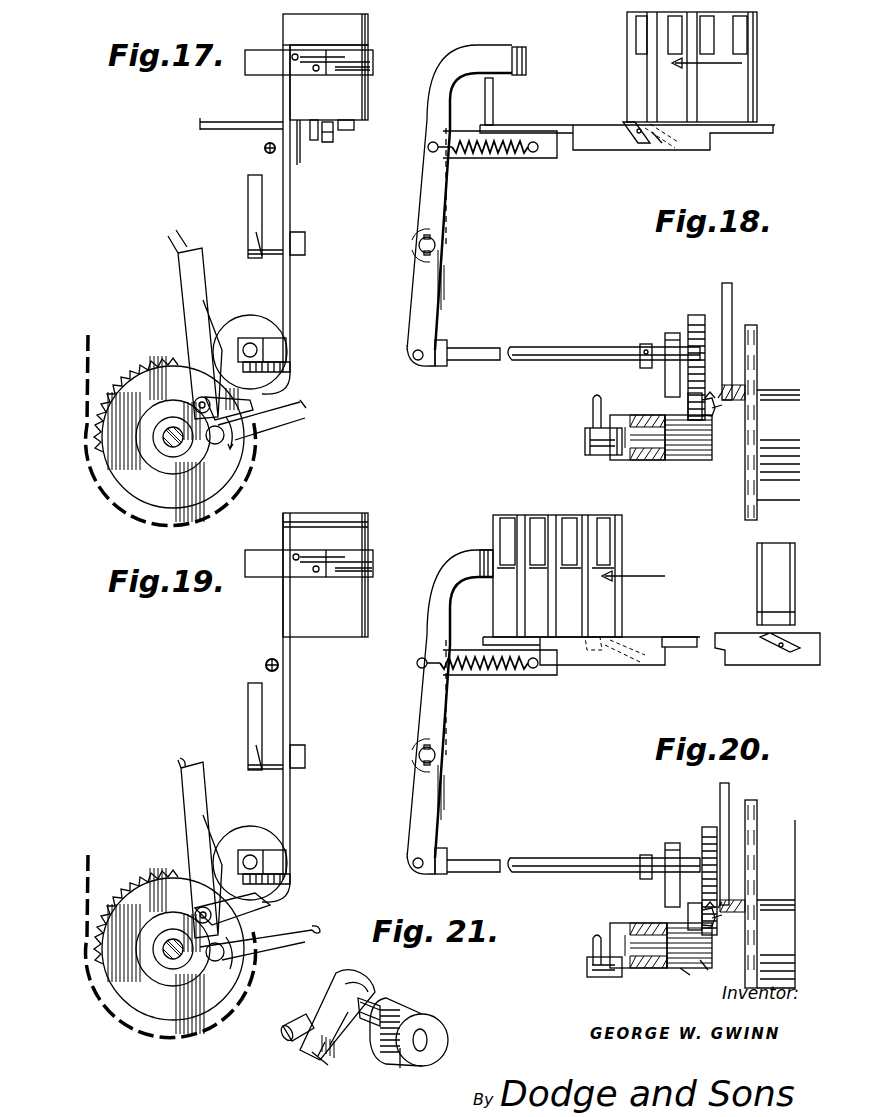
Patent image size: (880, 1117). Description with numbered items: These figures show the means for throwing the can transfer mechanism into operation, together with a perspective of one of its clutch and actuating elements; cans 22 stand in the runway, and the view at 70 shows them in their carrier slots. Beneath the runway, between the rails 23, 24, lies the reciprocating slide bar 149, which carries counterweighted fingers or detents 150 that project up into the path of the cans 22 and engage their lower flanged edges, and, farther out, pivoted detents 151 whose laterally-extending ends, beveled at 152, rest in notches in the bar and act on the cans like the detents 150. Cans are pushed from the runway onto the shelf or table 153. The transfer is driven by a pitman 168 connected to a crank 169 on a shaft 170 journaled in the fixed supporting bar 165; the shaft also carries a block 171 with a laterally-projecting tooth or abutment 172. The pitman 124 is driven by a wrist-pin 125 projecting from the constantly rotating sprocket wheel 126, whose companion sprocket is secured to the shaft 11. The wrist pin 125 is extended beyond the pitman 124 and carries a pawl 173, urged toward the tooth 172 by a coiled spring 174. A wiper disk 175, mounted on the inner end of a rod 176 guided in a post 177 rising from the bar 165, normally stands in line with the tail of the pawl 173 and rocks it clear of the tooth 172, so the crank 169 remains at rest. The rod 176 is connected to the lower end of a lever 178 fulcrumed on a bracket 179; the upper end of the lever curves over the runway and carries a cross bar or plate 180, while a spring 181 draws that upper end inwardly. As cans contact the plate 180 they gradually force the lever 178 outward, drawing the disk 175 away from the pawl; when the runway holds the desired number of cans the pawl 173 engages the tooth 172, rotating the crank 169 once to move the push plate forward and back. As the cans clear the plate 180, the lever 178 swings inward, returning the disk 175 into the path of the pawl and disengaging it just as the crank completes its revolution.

In FIG. 18, the shaft 11 is at (631, 338).
In FIG. 17, the type bar / carrier 22 is at (325, 67).
In FIG. 19, the type bar / carrier 22 is at (325, 575).
In FIG. 18, the type bar / carrier 22 is at (735, 85).
In FIG. 20, the type bar / carrier 22 is at (500, 600).
In FIG. 17, the rail 23 is at (352, 130).
In FIG. 17, the rail 24 is at (309, 153).
In FIG. 20, the rail 24 is at (682, 637).
In FIG. 20, the type carrier slot 70 is at (508, 535).
In FIG. 17, the pitman 124 is at (190, 297).
In FIG. 19, the pitman 124 is at (190, 809).
In FIG. 18, the pitman 124 is at (735, 290).
In FIG. 20, the pitman 124 is at (730, 792).
In FIG. 18, the wrist-pin 125 is at (752, 325).
In FIG. 20, the wrist-pin 125 is at (745, 935).
In FIG. 17, the sprocket wheel 126 is at (140, 505).
In FIG. 19, the sprocket wheel 126 is at (183, 975).
In FIG. 18, the sprocket wheel 126 is at (745, 470).
In FIG. 20, the sprocket wheel 126 is at (745, 950).
In FIG. 17, the slide bar 149 is at (330, 142).
In FIG. 18, the slide bar 149 is at (606, 140).
In FIG. 20, the slide bar 149 is at (668, 662).
In FIG. 20, the fingers or detents 150 is at (735, 662).
In FIG. 18, the pivoted detents 151 is at (655, 143).
In FIG. 18, the beveled end 152 is at (638, 125).
In FIG. 17, the shelf or table 153 is at (205, 128).
In FIG. 18, the shelf or table 153 is at (495, 110).
In FIG. 18, the supporting bar 165 is at (660, 462).
In FIG. 20, the supporting bar 165 is at (670, 968).
In FIG. 17, the pitman 168 is at (282, 418).
In FIG. 19, the pitman 168 is at (312, 928).
In FIG. 18, the pitman 168 is at (590, 410).
In FIG. 20, the pitman 168 is at (590, 942).
In FIG. 21, the pitman 168 is at (296, 1020).
In FIG. 18, the crank 169 is at (605, 445).
In FIG. 20, the crank 169 is at (607, 977).
In FIG. 21, the crank 169 is at (345, 1052).
In FIG. 17, the shaft 170 is at (173, 452).
In FIG. 19, the shaft 170 is at (170, 954).
In FIG. 18, the shaft 170 is at (640, 460).
In FIG. 20, the shaft 170 is at (688, 920).
In FIG. 21, the shaft 170 is at (385, 1000).
In FIG. 17, the block 171 is at (168, 442).
In FIG. 19, the block 171 is at (163, 937).
In FIG. 20, the block 171 is at (680, 975).
In FIG. 21, the block 171 is at (447, 1038).
In FIG. 17, the tooth or abutment 172 is at (170, 403).
In FIG. 19, the tooth or abutment 172 is at (240, 927).
In FIG. 20, the tooth or abutment 172 is at (700, 965).
In FIG. 21, the tooth or abutment 172 is at (408, 1070).
In FIG. 17, the pawl 173 is at (240, 402).
In FIG. 19, the pawl 173 is at (222, 912).
In FIG. 18, the pawl 173 is at (690, 404).
In FIG. 20, the pawl 173 is at (690, 912).
In FIG. 20, the coiled spring 174 is at (742, 903).
In FIG. 17, the disk 175 is at (243, 325).
In FIG. 19, the disk 175 is at (246, 830).
In FIG. 18, the disk 175 is at (678, 346).
In FIG. 20, the disk 175 is at (705, 828).
In FIG. 18, the rod 176 is at (540, 348).
In FIG. 20, the rod 176 is at (545, 858).
In FIG. 17, the post 177 is at (262, 347).
In FIG. 19, the post 177 is at (262, 858).
In FIG. 18, the post 177 is at (672, 333).
In FIG. 20, the post 177 is at (668, 843).
In FIG. 17, the lever 178 is at (283, 98).
In FIG. 19, the lever 178 is at (297, 690).
In FIG. 18, the lever 178 is at (455, 57).
In FIG. 20, the lever 178 is at (428, 580).
In FIG. 17, the bracket 179 is at (248, 214).
In FIG. 19, the bracket 179 is at (248, 706).
In FIG. 18, the bracket 179 is at (413, 195).
In FIG. 20, the bracket 179 is at (442, 705).
In FIG. 17, the cross bar or plate 180 is at (350, 62).
In FIG. 19, the cross bar or plate 180 is at (262, 572).
In FIG. 18, the cross bar or plate 180 is at (528, 62).
In FIG. 17, the spring 181 is at (264, 150).
In FIG. 19, the spring 181 is at (265, 665).
In FIG. 18, the spring 181 is at (498, 160).
In FIG. 20, the spring 181 is at (492, 675).